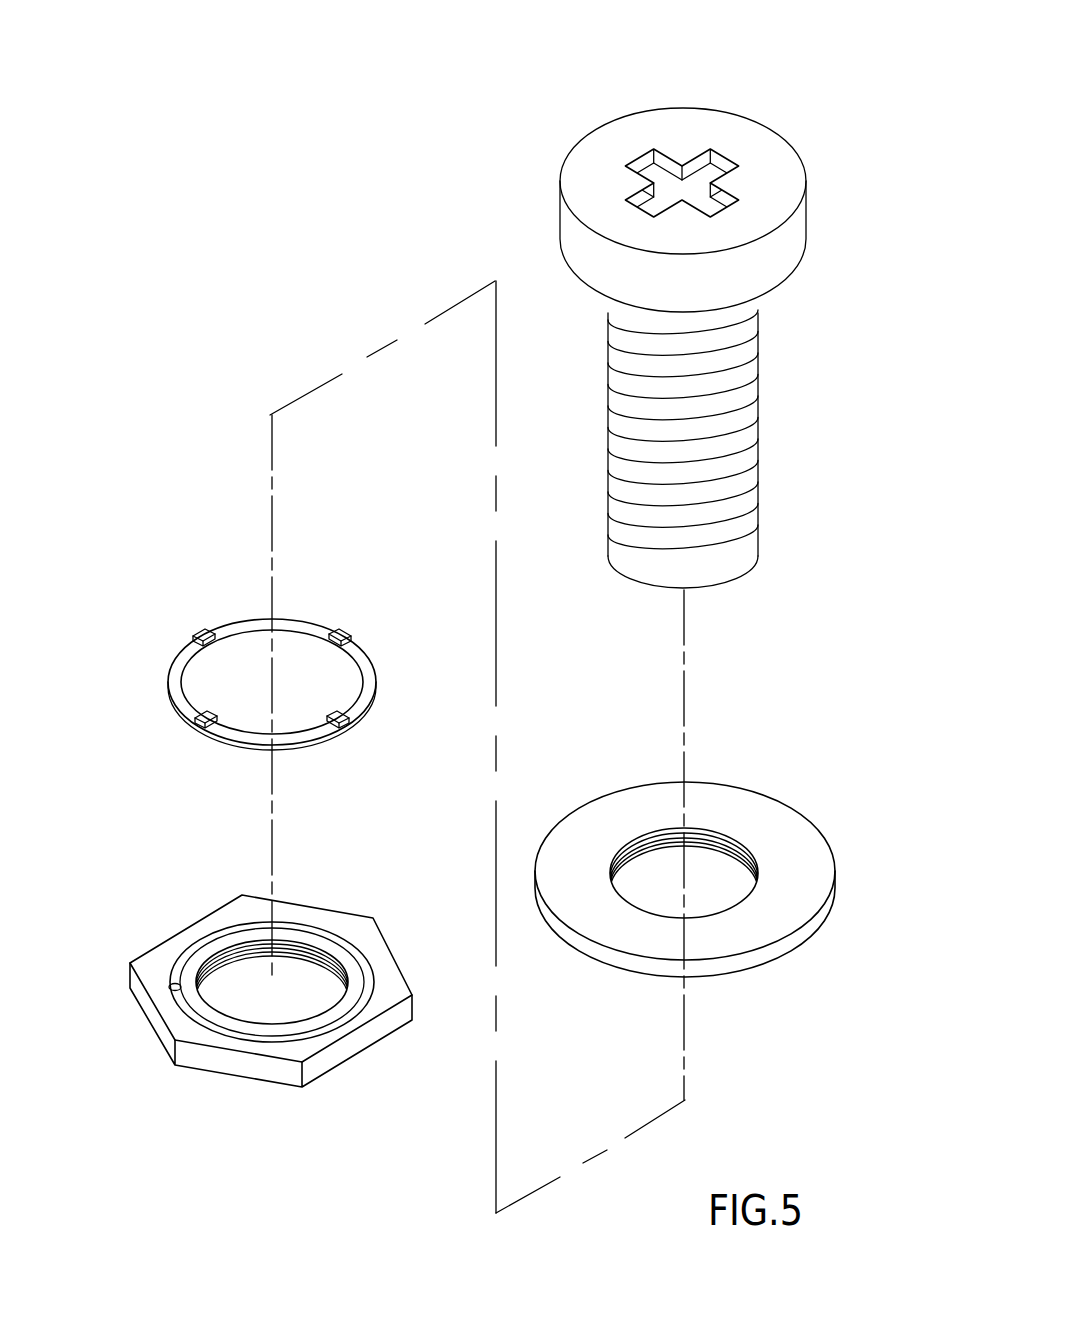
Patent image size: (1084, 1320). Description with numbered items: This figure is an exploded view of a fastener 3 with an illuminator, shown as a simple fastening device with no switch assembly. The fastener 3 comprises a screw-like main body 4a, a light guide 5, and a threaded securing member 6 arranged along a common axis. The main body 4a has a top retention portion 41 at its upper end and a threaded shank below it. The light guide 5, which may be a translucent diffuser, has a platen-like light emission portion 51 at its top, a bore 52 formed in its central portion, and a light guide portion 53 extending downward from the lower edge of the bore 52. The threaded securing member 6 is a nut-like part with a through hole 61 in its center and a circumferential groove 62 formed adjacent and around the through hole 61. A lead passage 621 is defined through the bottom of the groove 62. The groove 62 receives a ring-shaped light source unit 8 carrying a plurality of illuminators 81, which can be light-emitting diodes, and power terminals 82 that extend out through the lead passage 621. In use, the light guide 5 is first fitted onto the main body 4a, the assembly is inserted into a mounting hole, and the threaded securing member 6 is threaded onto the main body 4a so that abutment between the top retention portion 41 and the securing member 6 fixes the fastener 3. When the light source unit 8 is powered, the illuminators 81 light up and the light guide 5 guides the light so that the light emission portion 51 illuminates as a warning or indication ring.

The fastener 3 is at (238, 255).
The main body 4a is at (702, 294).
The top retention portion 41 is at (775, 277).
The light guide 5 is at (717, 840).
The light emission portion 51 is at (832, 833).
The bore 52 is at (700, 845).
The light guide portion 53 is at (818, 955).
The threaded securing member 6 is at (257, 1003).
The through hole 61 is at (247, 955).
The circumferential groove 62 is at (238, 962).
The lead passage 621 is at (172, 984).
The light source unit 8 is at (248, 667).
The illuminators 81 is at (205, 630).
The power terminals 82 is at (197, 716).